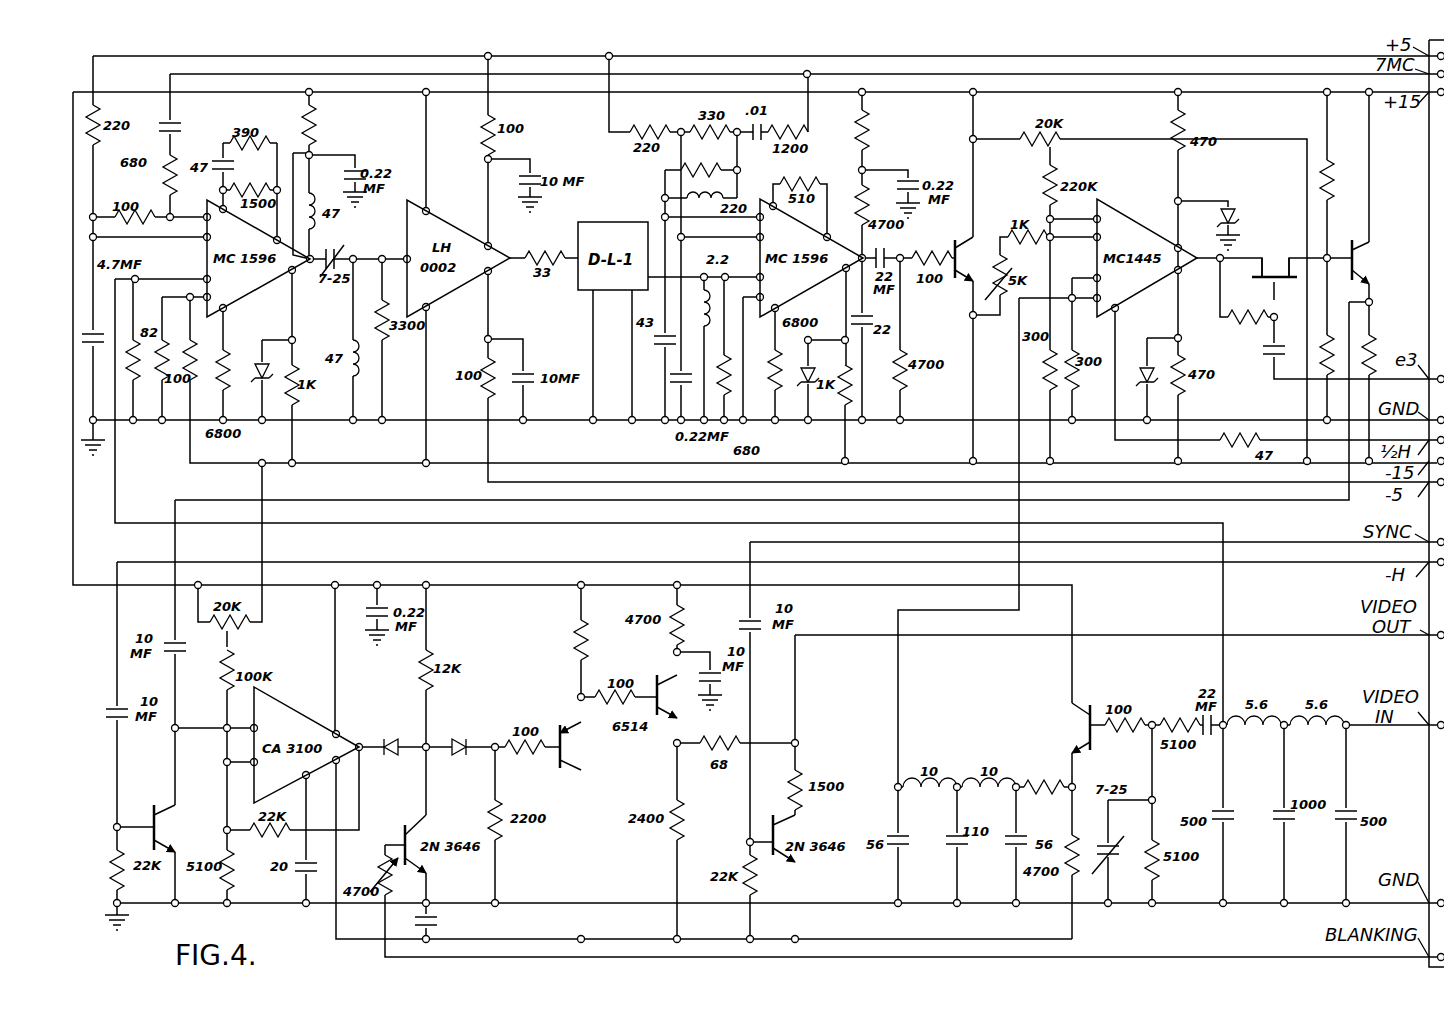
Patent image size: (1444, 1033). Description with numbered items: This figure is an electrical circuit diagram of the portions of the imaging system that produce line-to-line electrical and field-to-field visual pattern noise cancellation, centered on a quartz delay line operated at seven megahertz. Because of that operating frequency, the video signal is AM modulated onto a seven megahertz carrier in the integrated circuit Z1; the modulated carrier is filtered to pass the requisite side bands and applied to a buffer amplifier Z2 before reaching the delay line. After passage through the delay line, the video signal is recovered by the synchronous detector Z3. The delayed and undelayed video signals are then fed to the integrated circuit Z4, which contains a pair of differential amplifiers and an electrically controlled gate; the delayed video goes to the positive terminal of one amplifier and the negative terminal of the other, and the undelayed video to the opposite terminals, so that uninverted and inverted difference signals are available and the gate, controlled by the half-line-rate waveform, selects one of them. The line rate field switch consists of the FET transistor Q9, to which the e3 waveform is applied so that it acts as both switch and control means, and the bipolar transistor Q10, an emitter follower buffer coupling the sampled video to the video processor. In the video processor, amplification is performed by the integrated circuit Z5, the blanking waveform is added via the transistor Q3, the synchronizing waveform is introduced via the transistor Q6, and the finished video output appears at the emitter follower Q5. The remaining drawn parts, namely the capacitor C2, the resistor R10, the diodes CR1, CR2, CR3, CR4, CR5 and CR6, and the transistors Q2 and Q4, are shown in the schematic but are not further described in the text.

The integrated circuit Z1 is at (207, 256).
The buffer amplifier Z2 is at (412, 232).
The synchronous detector Z3 is at (812, 280).
The integrated circuit Z4 is at (1132, 230).
The integrated circuit Z5 is at (286, 712).
The capacitor C2 is at (179, 127).
The resistor R10 is at (324, 125).
The zener diode 7.5V CR1 is at (256, 368).
The zener diode 7.5V CR2 is at (1240, 216).
The zener diode 7.5V CR3 is at (1142, 347).
The diode CR4 is at (389, 735).
The diode CR5 is at (464, 735).
The zener diode CR6 is at (805, 390).
The transistor Q2 is at (160, 819).
The transistor Q3 is at (409, 838).
The transistor 6518 Q4 is at (601, 746).
The emitter follower Q5 is at (658, 687).
The transistor Q6 is at (776, 830).
The FET transistor Q9 is at (1274, 259).
The bipolar transistor Q10 is at (1372, 262).